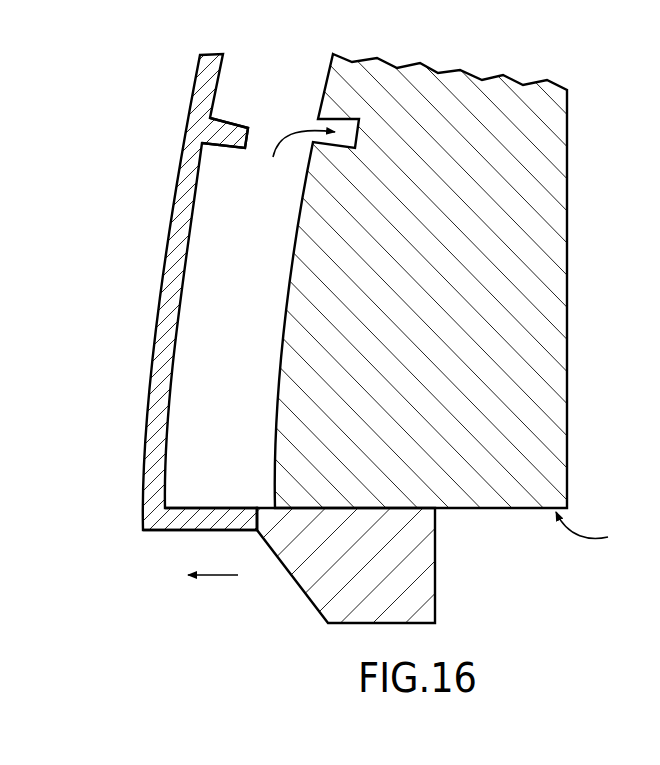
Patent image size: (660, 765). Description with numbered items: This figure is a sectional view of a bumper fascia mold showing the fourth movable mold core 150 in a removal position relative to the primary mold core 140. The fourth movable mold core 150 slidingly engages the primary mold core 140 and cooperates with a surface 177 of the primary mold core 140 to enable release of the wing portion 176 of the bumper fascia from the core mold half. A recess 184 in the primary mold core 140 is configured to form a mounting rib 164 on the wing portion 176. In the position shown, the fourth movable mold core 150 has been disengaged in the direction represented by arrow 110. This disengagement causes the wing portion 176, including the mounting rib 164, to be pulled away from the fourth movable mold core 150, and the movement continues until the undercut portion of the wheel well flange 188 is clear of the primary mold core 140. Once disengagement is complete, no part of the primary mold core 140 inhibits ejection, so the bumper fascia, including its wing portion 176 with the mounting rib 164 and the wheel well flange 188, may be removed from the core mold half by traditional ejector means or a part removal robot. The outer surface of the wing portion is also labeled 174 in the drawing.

The primary mold core 140 is at (567, 135).
The fourth movable mold core 150 is at (435, 585).
The arm outer surface 174 is at (193, 95).
The wing portion 176 is at (330, 292).
The mounting rib 164 is at (213, 112).
The recess 184 is at (291, 158).
The wheel well flange 188 is at (200, 508).
The surface 177 is at (605, 530).
The arrow 110 is at (218, 575).